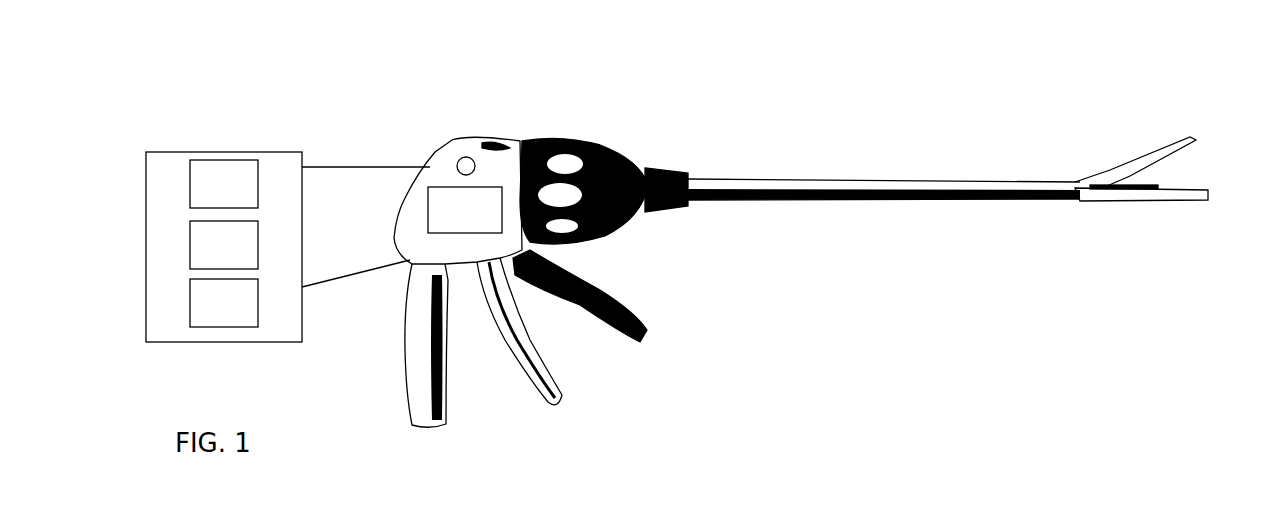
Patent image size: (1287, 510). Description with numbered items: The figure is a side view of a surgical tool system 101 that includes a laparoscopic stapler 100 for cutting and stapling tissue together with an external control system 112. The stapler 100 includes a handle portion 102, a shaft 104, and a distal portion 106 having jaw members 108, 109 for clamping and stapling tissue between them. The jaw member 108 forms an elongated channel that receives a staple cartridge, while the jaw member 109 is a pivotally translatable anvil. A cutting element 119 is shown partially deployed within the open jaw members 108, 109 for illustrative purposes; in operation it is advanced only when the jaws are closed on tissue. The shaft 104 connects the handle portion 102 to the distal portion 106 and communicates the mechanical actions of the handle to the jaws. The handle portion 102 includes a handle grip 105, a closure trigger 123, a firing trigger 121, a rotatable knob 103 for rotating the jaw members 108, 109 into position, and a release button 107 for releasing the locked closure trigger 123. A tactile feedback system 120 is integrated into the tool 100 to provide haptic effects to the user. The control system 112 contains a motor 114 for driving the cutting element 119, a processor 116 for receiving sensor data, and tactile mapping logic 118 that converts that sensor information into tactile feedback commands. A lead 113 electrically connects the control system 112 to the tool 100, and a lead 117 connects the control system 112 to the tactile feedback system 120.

The laparoscopic stapler 100 is at (1247, 438).
The surgical tool system 101 is at (302, 105).
The handle portion 102 is at (625, 113).
The rotatable knob 103 is at (630, 212).
The shaft 104 is at (876, 186).
The handle grip 105 is at (426, 373).
The distal portion 106 is at (1208, 135).
The release button 107 is at (397, 221).
The jaw member 108 is at (1157, 205).
The jaw member / anvil 109 is at (1122, 160).
The control system 112 is at (200, 152).
The lead 113 is at (370, 165).
The motor 114 is at (224, 184).
The processor 116 is at (224, 245).
The lead 117 is at (373, 280).
The tactile mapping logic 118 is at (224, 303).
The cutting element 119 is at (1140, 184).
The tactile feedback system 120 is at (484, 221).
The firing trigger 121 is at (610, 325).
The closure trigger 123 is at (535, 375).